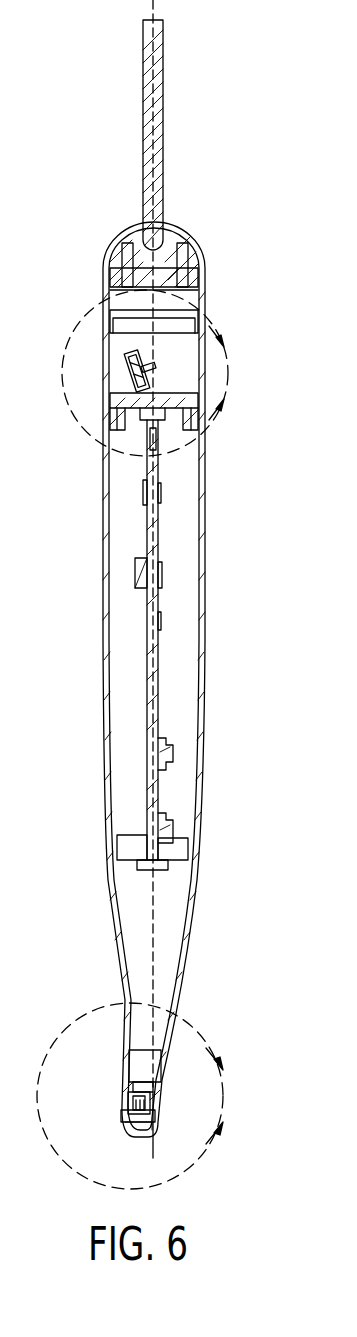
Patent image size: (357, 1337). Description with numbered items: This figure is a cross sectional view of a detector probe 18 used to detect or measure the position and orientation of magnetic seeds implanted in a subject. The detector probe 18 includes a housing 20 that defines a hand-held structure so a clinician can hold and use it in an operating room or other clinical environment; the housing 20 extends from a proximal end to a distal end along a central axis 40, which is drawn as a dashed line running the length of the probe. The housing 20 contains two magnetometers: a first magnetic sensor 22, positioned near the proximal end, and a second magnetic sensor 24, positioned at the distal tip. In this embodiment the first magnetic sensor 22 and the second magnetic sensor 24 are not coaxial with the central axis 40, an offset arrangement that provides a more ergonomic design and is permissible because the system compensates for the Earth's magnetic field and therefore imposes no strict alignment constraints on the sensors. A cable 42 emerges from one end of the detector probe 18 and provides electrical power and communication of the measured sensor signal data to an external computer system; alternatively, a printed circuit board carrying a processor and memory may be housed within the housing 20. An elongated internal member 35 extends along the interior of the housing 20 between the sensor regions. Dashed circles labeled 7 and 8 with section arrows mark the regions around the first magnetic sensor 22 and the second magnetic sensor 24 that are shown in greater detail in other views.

The section view 7 indicator 7 is at (145, 373).
The section view 8 indicator 8 is at (133, 1096).
The detector probe 18 is at (177, 696).
The housing 20 is at (104, 708).
The first magnetic sensor 22 is at (118, 375).
The second magnetic sensor 24 is at (126, 1146).
The central shaft 35 is at (155, 505).
The central axis 40 is at (152, 940).
The cable 42 is at (143, 145).